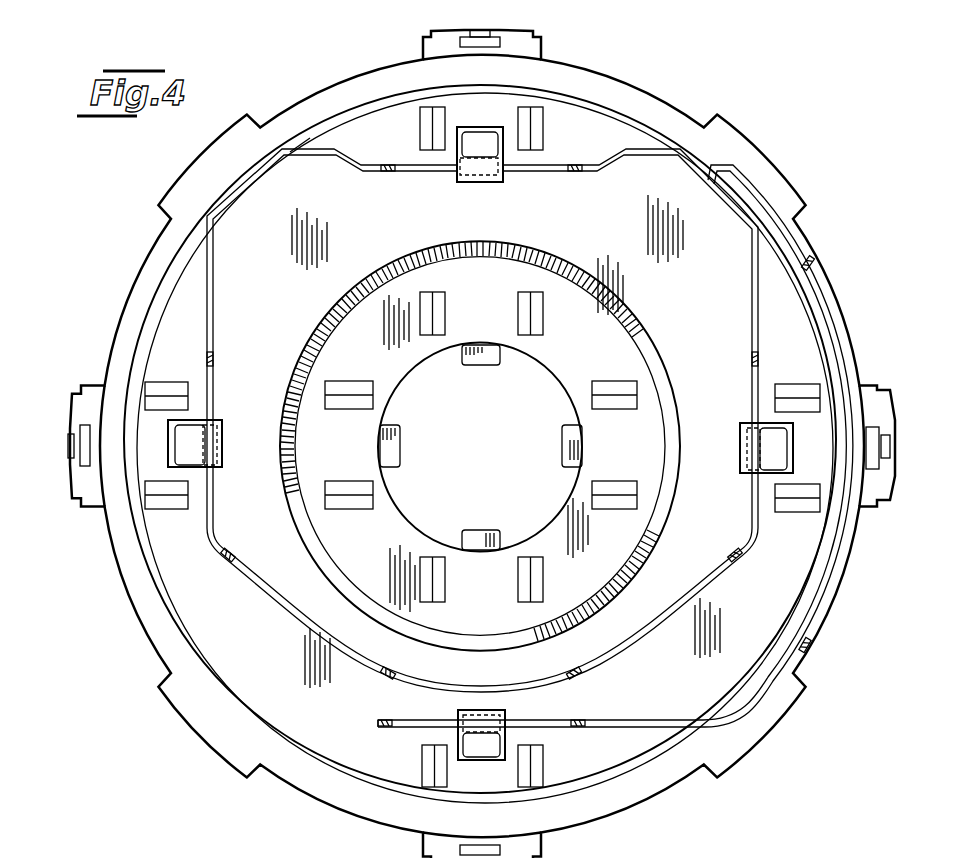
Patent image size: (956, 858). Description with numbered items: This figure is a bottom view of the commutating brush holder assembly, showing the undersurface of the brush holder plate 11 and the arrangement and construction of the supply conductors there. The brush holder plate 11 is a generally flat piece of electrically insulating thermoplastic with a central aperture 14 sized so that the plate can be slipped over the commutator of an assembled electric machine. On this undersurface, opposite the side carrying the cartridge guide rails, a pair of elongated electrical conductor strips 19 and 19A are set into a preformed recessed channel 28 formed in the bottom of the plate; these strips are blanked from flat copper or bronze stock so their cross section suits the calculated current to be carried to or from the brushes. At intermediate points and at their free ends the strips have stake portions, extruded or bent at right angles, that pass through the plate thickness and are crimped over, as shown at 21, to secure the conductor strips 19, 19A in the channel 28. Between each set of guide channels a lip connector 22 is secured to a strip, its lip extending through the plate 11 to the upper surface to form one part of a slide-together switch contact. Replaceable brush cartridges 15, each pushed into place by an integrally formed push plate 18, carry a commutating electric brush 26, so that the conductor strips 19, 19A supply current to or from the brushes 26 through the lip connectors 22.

The brush holder plate 11 is at (643, 90).
The central aperture 14 is at (538, 372).
The brush cartridge 15 is at (351, 855).
The push plate 18 is at (440, 40).
The electrical conductor strip 19 is at (213, 318).
The electrical conductor strip 19A is at (278, 165).
The crimped stake portion 21 is at (390, 172).
The lip connector 22 is at (495, 172).
The commutating electric brush 26 is at (478, 366).
The recessed channel 28 is at (350, 117).